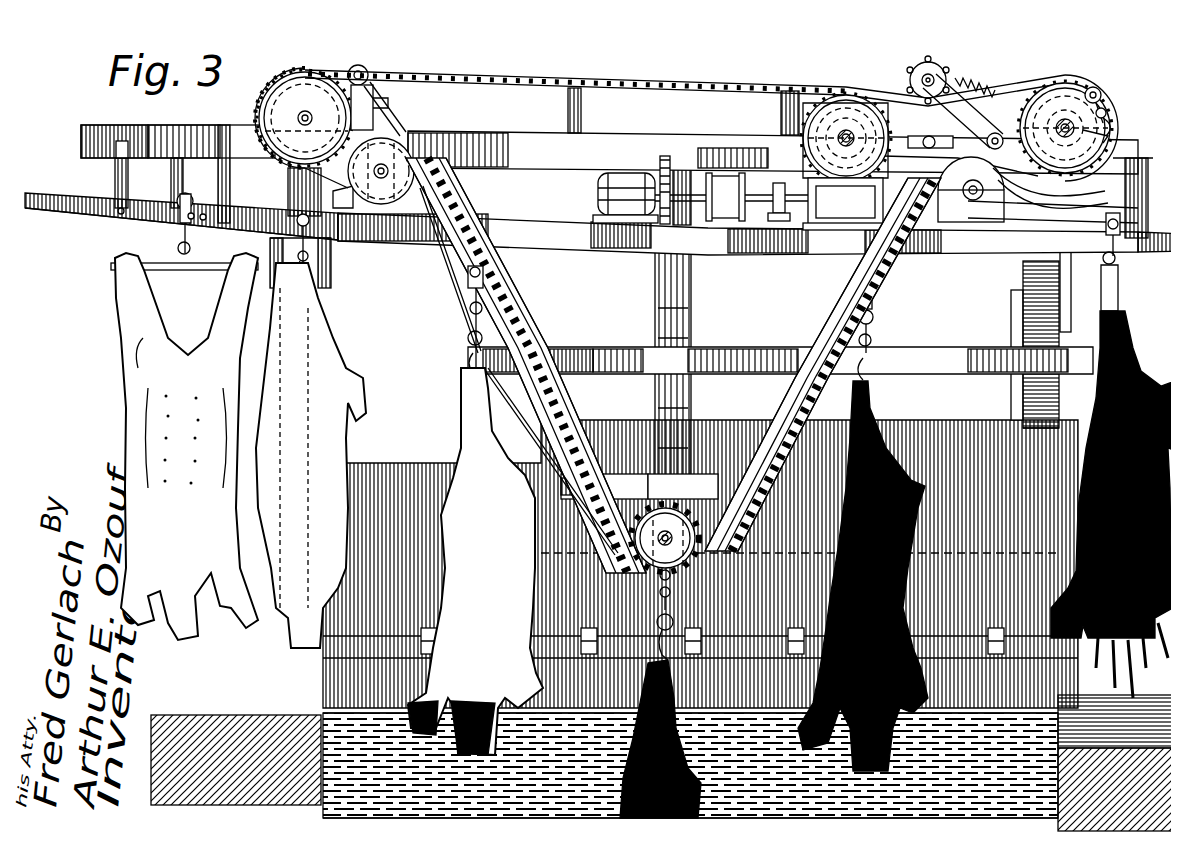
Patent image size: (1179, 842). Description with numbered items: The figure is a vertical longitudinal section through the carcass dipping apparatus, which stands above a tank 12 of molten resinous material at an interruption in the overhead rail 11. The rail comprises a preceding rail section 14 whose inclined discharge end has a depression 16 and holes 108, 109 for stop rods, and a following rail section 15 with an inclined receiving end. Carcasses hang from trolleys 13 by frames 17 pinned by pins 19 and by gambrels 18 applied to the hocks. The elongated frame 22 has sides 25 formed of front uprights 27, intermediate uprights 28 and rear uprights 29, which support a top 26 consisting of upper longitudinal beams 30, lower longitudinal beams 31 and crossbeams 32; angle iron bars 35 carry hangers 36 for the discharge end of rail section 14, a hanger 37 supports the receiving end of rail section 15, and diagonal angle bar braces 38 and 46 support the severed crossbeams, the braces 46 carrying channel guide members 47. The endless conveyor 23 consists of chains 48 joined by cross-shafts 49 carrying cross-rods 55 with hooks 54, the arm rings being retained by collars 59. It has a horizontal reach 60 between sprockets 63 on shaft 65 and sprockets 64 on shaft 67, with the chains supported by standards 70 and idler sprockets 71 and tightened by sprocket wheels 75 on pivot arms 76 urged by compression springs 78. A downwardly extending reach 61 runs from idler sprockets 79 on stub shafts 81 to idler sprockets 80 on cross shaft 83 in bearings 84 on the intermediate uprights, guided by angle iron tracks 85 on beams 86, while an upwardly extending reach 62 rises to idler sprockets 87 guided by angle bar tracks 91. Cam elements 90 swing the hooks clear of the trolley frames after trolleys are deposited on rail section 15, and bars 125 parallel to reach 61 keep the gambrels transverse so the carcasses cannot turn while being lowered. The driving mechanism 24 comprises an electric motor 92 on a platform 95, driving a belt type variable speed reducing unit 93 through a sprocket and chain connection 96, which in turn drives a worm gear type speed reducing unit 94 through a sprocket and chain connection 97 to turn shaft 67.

The overhead rail 11 is at (24, 183).
The tank 12 is at (320, 797).
The trolleys 13 is at (1112, 232).
The preceding rail section 14 is at (30, 203).
The following rail section 15 is at (1160, 226).
The depression 16 is at (302, 232).
The frames 17 is at (182, 188).
The gambrels 18 is at (145, 262).
The pins 19 is at (183, 200).
The frame 22 is at (698, 296).
The endless conveyor 23 is at (818, 70).
The driving mechanism 24 is at (577, 191).
The sides 25 is at (1005, 356).
The top 26 is at (648, 124).
The front uprights 27 is at (266, 336).
The intermediate uprights 28 is at (683, 323).
The rear uprights 29 is at (1020, 325).
The upper longitudinal beams 30 is at (525, 135).
The lower longitudinal beams 31 is at (556, 240).
The crossbeams 32 is at (82, 117).
The angle iron bars 35 is at (118, 135).
The hangers 36 is at (107, 174).
The hanger 37 is at (1142, 193).
The diagonal angle bar braces 38 is at (318, 265).
The diagonal angle bar braces 46 is at (1008, 290).
The guide members 47 is at (975, 212).
The chains 48 is at (690, 76).
The cross-shafts 49 is at (1100, 92).
The hooks 54 is at (1102, 125).
The cross-rods 55 is at (1105, 110).
The collars 59 is at (362, 100).
The horizontal reach 60 is at (512, 60).
The downwardly extending reach 61 is at (505, 313).
The upwardly extending reach 62 is at (830, 316).
The sprockets 63 is at (352, 58).
The sprockets 64 is at (1060, 115).
The shaft 65 is at (297, 103).
The shaft 67 is at (1093, 85).
The standards 70 is at (402, 93).
The idler sprockets 71 is at (845, 100).
The sprocket wheels 75 is at (905, 62).
The pivot arms 76 is at (975, 100).
The compression springs 78 is at (962, 70).
The idler sprockets 79 is at (345, 186).
The idler sprockets 80 is at (658, 512).
The stub shafts 81 is at (378, 160).
The cross shaft 83 is at (604, 486).
The bearings 84 is at (683, 486).
The angle iron tracks 85 is at (540, 392).
The beams 86 is at (580, 341).
The idler sprockets 87 is at (965, 175).
The cam elements 90 is at (1070, 190).
The angle bar tracks 91 is at (790, 385).
The electric motor 92 is at (612, 170).
The belt type variable speed reducing unit 93 is at (718, 170).
The worm gear type speed reducing unit 94 is at (838, 196).
The platform 95 is at (615, 215).
The sprocket and chain connection 96 is at (660, 150).
The sprocket and chain connection 97 is at (775, 213).
The hole 108 is at (180, 210).
The hole 109 is at (196, 212).
The bars 125 is at (425, 285).